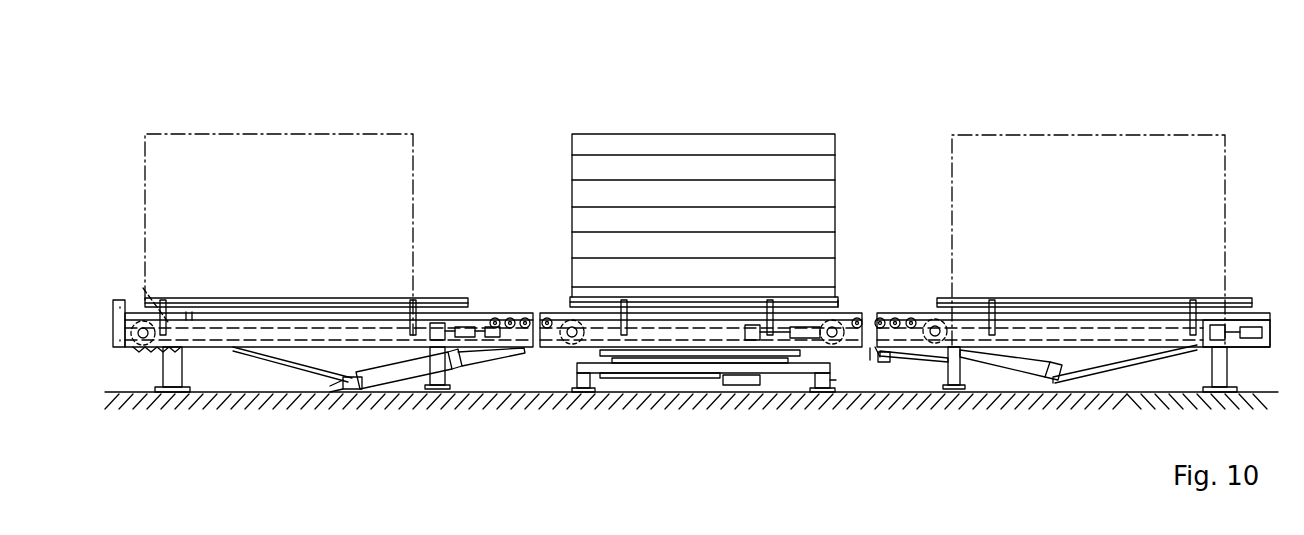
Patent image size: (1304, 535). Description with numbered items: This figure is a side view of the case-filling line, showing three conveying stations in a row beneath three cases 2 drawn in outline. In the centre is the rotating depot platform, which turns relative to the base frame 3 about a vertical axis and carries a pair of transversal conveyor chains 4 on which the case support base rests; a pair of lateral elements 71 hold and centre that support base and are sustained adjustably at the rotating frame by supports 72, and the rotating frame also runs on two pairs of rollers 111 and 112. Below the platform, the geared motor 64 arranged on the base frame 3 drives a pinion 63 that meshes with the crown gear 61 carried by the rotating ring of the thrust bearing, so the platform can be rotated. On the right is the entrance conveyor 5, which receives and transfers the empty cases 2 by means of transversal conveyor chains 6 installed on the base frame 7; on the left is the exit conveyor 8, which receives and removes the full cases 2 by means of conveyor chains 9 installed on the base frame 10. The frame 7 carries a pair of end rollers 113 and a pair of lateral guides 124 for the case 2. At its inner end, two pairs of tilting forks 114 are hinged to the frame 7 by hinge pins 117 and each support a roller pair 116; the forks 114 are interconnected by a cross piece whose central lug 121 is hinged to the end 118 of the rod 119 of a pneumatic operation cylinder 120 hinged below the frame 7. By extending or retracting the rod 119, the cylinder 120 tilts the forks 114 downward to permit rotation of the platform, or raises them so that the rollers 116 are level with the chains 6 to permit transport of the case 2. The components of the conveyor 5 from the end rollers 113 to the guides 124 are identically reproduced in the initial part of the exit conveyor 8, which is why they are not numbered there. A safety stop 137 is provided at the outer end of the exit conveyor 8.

The case 2 is at (293, 133).
The base frame 3 is at (703, 402).
The pair of transversal conveyor chains 4 is at (710, 284).
The entrance conveyor 5 is at (1060, 335).
The transversal conveyor chains 6 is at (1087, 315).
The base frame 7 is at (1094, 273).
The exit conveyor 8 is at (579, 343).
The conveyor chains 9 is at (253, 300).
The base frame 10 is at (300, 318).
The crown gear 61 is at (637, 370).
The pinion 63 is at (738, 377).
The geared motor 64 is at (680, 375).
The pair of lateral elements 71 is at (838, 305).
The supports 72 is at (770, 320).
The pair of rollers 111 is at (858, 318).
The pair of rollers 112 is at (547, 318).
The pair of end rollers 113 is at (494, 318).
The tilting forks 114 is at (865, 348).
The roller pair 116 is at (525, 318).
The hinge pin 117 is at (955, 320).
The end of the rod 118 is at (884, 352).
The rod 119 is at (493, 363).
The pneumatic operation cylinder 120 is at (418, 372).
The central lug 121 is at (873, 355).
The pair of lateral guides 124 is at (1047, 298).
The safety stop 137 is at (115, 310).